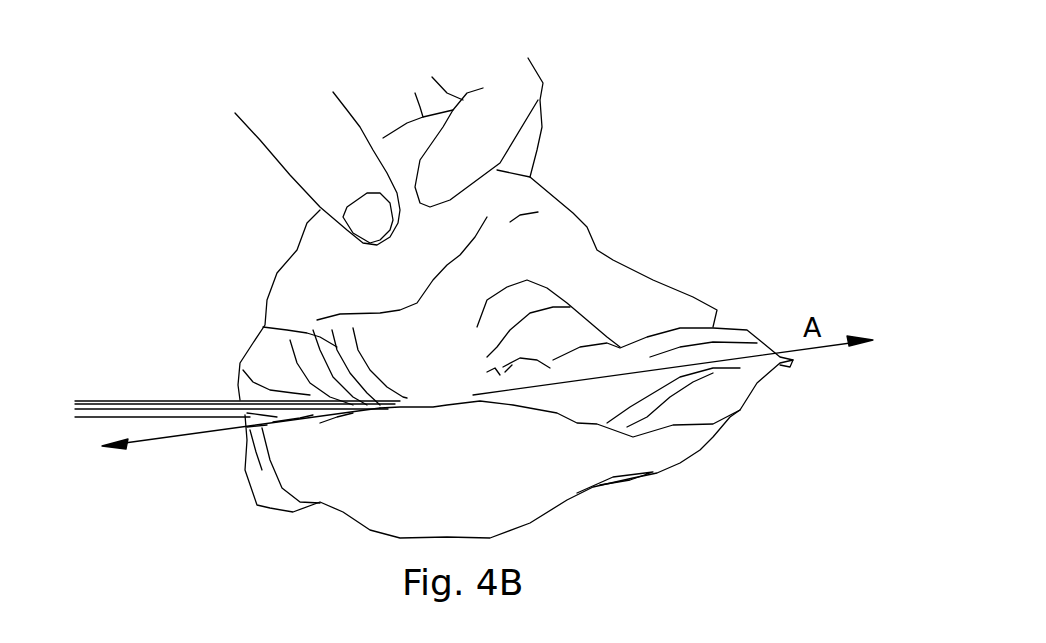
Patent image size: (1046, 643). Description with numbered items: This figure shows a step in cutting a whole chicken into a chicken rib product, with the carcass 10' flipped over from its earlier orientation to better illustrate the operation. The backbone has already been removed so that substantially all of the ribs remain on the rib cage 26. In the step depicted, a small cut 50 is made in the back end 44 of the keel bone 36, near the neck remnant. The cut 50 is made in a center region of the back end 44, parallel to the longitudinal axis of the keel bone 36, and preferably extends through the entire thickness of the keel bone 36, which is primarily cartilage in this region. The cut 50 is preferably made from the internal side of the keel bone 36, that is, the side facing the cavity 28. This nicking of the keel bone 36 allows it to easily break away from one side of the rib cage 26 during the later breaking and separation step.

The carcass 10' is at (519, 354).
The rib cage 26 is at (263, 327).
The cavity 28 is at (245, 392).
The keel bone 36 is at (733, 353).
The back end 44 is at (263, 427).
The cut 50 is at (380, 410).